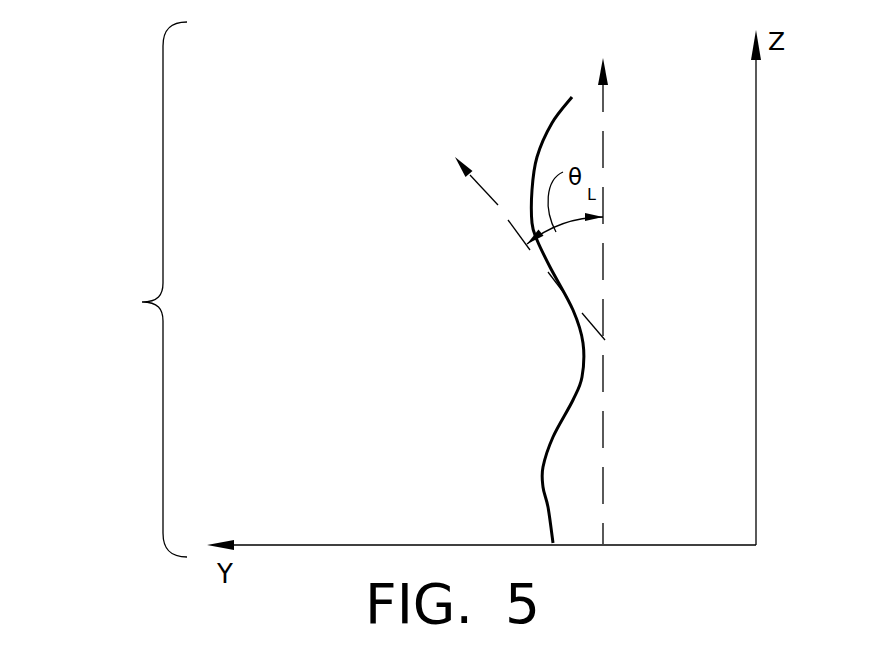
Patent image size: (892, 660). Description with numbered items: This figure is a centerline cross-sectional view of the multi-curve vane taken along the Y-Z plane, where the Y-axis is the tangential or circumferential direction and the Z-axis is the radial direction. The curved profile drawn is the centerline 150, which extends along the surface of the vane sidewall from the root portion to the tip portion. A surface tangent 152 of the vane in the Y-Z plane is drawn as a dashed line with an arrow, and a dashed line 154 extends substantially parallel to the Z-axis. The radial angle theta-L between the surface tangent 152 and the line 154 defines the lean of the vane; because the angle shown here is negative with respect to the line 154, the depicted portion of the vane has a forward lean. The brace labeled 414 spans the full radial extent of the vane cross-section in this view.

The centerline 150 is at (563, 107).
The surface tangent 152 is at (483, 190).
The line 154 is at (605, 140).
The span region of airfoil 414 is at (142, 302).